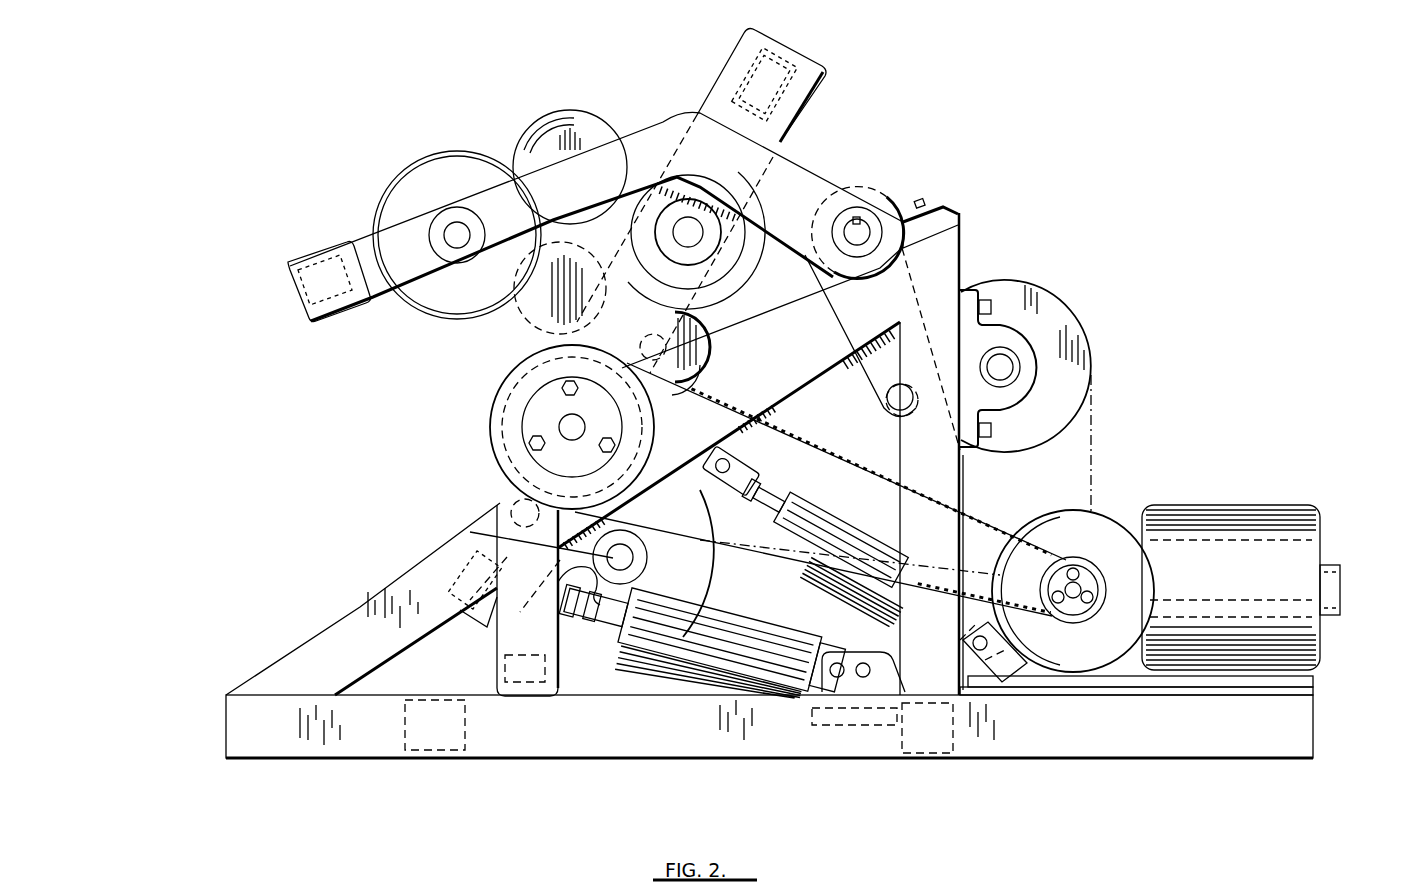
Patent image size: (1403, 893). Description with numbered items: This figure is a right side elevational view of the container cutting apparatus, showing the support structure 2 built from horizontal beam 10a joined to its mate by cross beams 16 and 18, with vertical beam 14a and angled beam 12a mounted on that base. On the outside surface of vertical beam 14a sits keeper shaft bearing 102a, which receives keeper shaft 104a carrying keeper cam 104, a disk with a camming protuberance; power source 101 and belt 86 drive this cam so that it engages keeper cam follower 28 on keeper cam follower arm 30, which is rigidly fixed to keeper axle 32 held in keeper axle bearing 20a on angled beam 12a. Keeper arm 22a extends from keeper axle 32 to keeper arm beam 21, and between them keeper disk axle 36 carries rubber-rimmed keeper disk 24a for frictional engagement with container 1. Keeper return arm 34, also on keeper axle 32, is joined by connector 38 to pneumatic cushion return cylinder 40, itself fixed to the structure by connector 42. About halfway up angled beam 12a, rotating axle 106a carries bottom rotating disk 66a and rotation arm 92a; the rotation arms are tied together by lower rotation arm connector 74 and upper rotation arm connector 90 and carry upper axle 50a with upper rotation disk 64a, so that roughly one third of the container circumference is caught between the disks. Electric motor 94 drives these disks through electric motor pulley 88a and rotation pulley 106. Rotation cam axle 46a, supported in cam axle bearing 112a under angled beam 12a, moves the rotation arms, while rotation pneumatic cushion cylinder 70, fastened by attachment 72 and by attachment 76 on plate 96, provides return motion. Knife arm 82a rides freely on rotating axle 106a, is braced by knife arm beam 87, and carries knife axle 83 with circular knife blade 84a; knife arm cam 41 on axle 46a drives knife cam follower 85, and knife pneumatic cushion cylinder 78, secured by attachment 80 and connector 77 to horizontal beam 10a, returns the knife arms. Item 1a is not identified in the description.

The container 1 is at (523, 332).
The roller 1a is at (580, 107).
The support structure 2 is at (328, 596).
The horizontal beam 10a is at (1285, 738).
The angled beam 12a is at (327, 660).
The vertical beam 14a is at (947, 247).
The cross beam 16 is at (937, 755).
The cross beam 18 is at (405, 725).
The keeper axle bearing 20a is at (943, 207).
The keeper arm beam 21 is at (297, 312).
The keeper arm 22a is at (800, 177).
The keeper disk 24a is at (437, 153).
The keeper cam follower 28 is at (883, 417).
The keeper cam follower arm 30 is at (880, 370).
The keeper axle 32 is at (862, 230).
The keeper return arm 34 is at (800, 337).
The keeper disk axle 36 is at (455, 235).
The connector 38 is at (737, 484).
The pneumatic cushion return cylinder 40 is at (837, 537).
The knife arm cam 41 is at (690, 590).
The connector 42 is at (997, 660).
The rotation cam axle 46a is at (524, 537).
The upper axle 50a is at (688, 230).
The upper rotation disk 64a is at (745, 283).
The bottom rotating disk 66a is at (497, 430).
The rotation pneumatic cushion cylinder 70 is at (660, 665).
The rotation pneumatic cushion cylinder attachment 72 is at (567, 653).
The lower rotation arm connector 74 is at (515, 685).
The attachment 76 is at (880, 690).
The connector 77 is at (832, 693).
The knife pneumatic cushion cylinder 78 is at (740, 643).
The attachment 80 is at (497, 633).
The knife arm 82a is at (677, 347).
The knife axle 83 is at (637, 292).
The circular knife blade 84a is at (693, 373).
The knife cam follower 85 is at (517, 503).
The belt 86 is at (1093, 437).
The knife arm beam 87 is at (460, 603).
The electric motor pulley 88a is at (1075, 603).
The upper rotation arm connector 90 is at (812, 93).
The rotation arm 92a is at (783, 45).
The electric motor 94 is at (1097, 533).
The plate 96 is at (857, 720).
The power source 101 is at (1240, 528).
The keeper shaft bearing 102a is at (1032, 377).
The keeper cam 104 is at (1073, 310).
The keeper shaft 104a is at (1000, 370).
The rotation pulley 106 is at (500, 383).
The rotating axle 106a is at (570, 427).
The cam axle bearing 112a is at (650, 562).